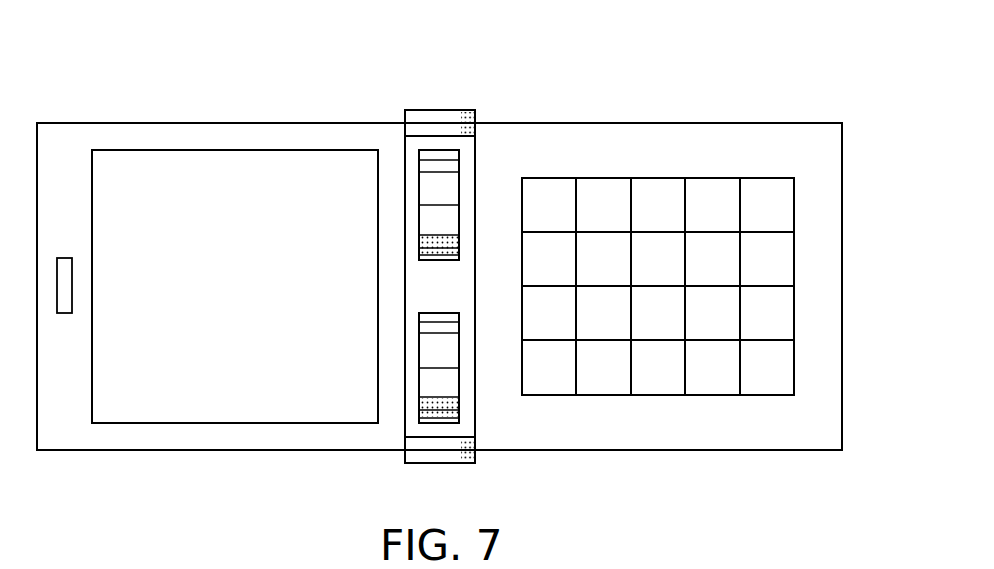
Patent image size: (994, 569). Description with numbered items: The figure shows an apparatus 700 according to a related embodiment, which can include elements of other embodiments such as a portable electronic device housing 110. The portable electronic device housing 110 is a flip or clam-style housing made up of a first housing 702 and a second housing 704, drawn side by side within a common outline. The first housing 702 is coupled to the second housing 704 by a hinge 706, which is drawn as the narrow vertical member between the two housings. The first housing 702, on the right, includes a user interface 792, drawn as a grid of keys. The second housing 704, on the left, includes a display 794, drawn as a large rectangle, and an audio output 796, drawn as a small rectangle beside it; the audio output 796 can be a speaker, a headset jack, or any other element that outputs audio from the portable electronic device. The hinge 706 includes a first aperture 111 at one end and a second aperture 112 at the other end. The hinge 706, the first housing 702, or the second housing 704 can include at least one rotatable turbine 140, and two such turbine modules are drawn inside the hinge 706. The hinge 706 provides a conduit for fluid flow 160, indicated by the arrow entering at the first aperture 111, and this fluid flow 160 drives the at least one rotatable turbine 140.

The apparatus 700 is at (815, 71).
The first housing 702 is at (692, 123).
The second housing 704 is at (257, 123).
The hinge 706 is at (475, 195).
The portable electronic device housing 110 is at (596, 90).
The first aperture 111 is at (459, 91).
The second aperture 112 is at (443, 479).
The rotatable turbine 140 is at (460, 357).
The fluid flow 160 is at (440, 86).
The user interface 792 is at (794, 205).
The display 794 is at (262, 423).
The audio output 796 is at (63, 258).